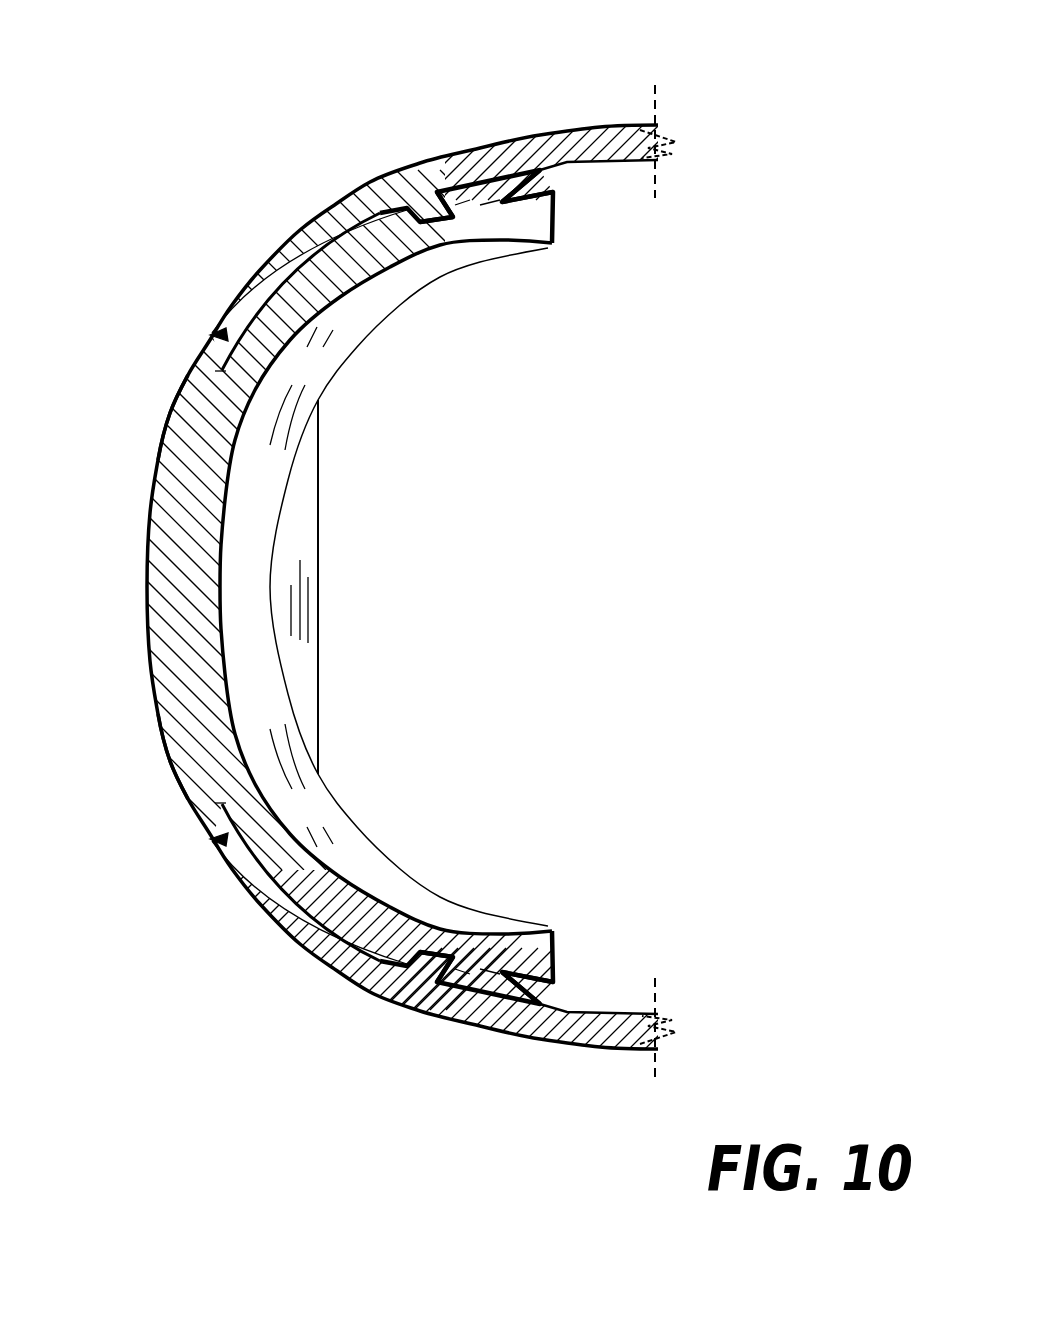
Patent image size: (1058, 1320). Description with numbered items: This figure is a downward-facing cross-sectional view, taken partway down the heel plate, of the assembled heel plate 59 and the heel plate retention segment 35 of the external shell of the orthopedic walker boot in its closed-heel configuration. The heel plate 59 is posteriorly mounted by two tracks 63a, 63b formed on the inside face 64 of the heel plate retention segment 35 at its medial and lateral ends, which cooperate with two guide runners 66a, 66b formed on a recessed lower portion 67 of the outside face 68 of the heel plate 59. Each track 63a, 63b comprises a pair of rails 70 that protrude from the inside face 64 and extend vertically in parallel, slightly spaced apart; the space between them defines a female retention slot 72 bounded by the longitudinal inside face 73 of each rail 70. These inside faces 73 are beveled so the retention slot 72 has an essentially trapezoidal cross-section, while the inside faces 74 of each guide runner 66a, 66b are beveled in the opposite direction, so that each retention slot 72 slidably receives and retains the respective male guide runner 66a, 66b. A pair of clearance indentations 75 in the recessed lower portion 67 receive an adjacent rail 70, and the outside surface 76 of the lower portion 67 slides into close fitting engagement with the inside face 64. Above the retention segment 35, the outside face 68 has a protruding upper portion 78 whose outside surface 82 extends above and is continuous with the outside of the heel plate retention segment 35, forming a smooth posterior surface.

The heel plate retention segment 35 is at (262, 915).
The heel plate 59 is at (150, 655).
The track 63a is at (570, 168).
The track 63b is at (565, 1000).
The inside face 64 is at (255, 624).
The guide runner 66a is at (477, 200).
The guide runner 66b is at (477, 975).
The recessed lower portion 67 is at (347, 267).
The outside face 68 is at (170, 752).
The rail 70 is at (415, 205).
The female retention slot 72 is at (490, 180).
The inside face 73 is at (436, 190).
The inside face 74 is at (487, 205).
The clearance indentation 75 is at (458, 205).
The outside surface 76 is at (275, 290).
The protruding upper portion 78 is at (177, 537).
The outside surface 82 is at (178, 405).